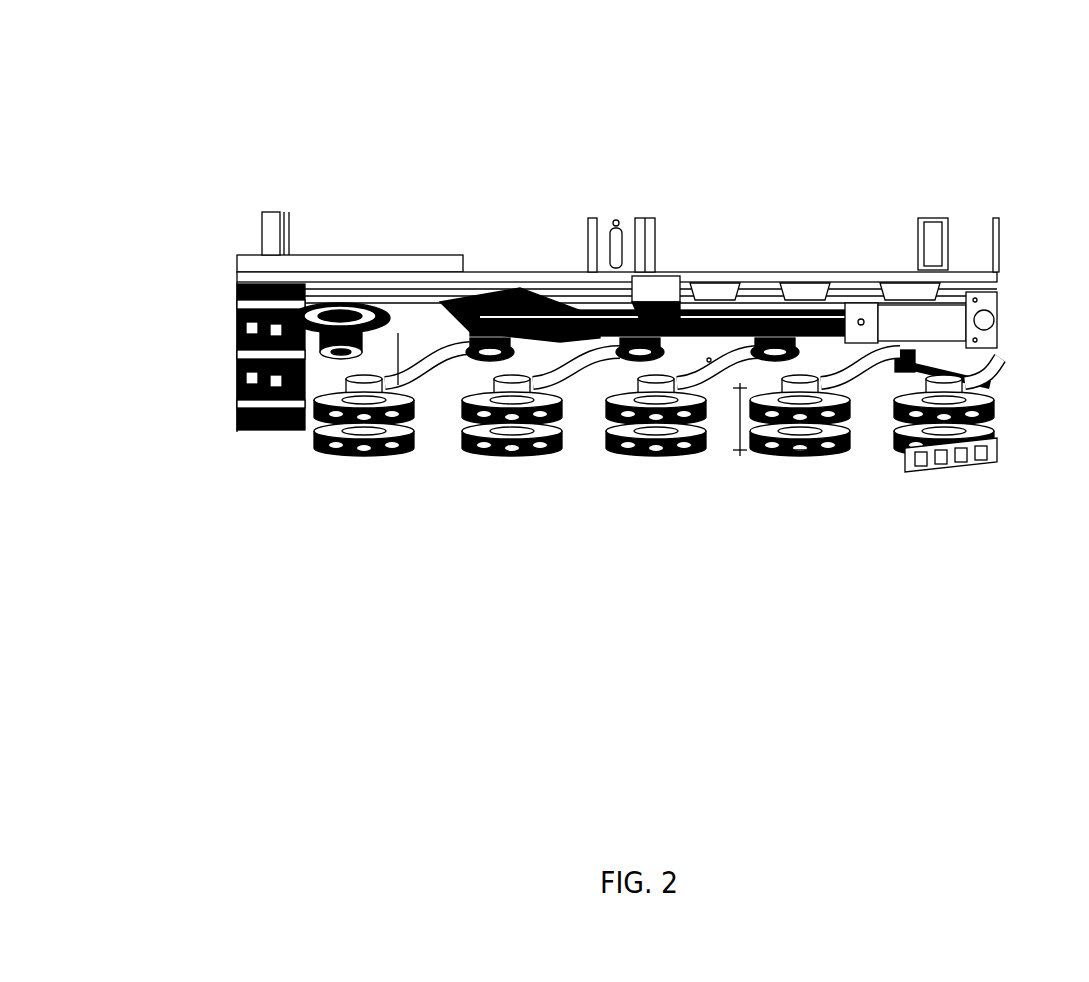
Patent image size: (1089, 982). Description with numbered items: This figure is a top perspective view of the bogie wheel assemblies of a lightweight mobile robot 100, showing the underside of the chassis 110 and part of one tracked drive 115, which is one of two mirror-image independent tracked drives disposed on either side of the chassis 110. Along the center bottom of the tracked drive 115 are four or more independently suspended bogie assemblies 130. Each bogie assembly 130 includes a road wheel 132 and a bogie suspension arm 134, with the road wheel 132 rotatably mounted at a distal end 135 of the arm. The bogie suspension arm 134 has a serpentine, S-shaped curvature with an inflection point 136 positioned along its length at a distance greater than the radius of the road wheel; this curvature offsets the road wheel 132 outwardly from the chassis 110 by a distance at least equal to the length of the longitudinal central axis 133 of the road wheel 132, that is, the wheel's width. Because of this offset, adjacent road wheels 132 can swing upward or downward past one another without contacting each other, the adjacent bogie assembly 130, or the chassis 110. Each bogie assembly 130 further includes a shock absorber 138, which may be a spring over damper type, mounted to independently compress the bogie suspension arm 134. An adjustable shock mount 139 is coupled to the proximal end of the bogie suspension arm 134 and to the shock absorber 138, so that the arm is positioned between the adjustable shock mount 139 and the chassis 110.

The lightweight mobile robot 100 is at (602, 108).
The chassis 110 is at (685, 243).
The tracked drive 115 is at (208, 398).
The bogie assembly 130 is at (304, 437).
The road wheel 132 is at (325, 450).
The longitudinal central axis of the road wheel 133 is at (800, 452).
The bogie suspension arm 134 is at (395, 388).
The distal end 135 is at (486, 348).
The inflection point 136 is at (708, 360).
The shock absorber 138 is at (913, 315).
The adjustable shock mount 139 is at (496, 350).